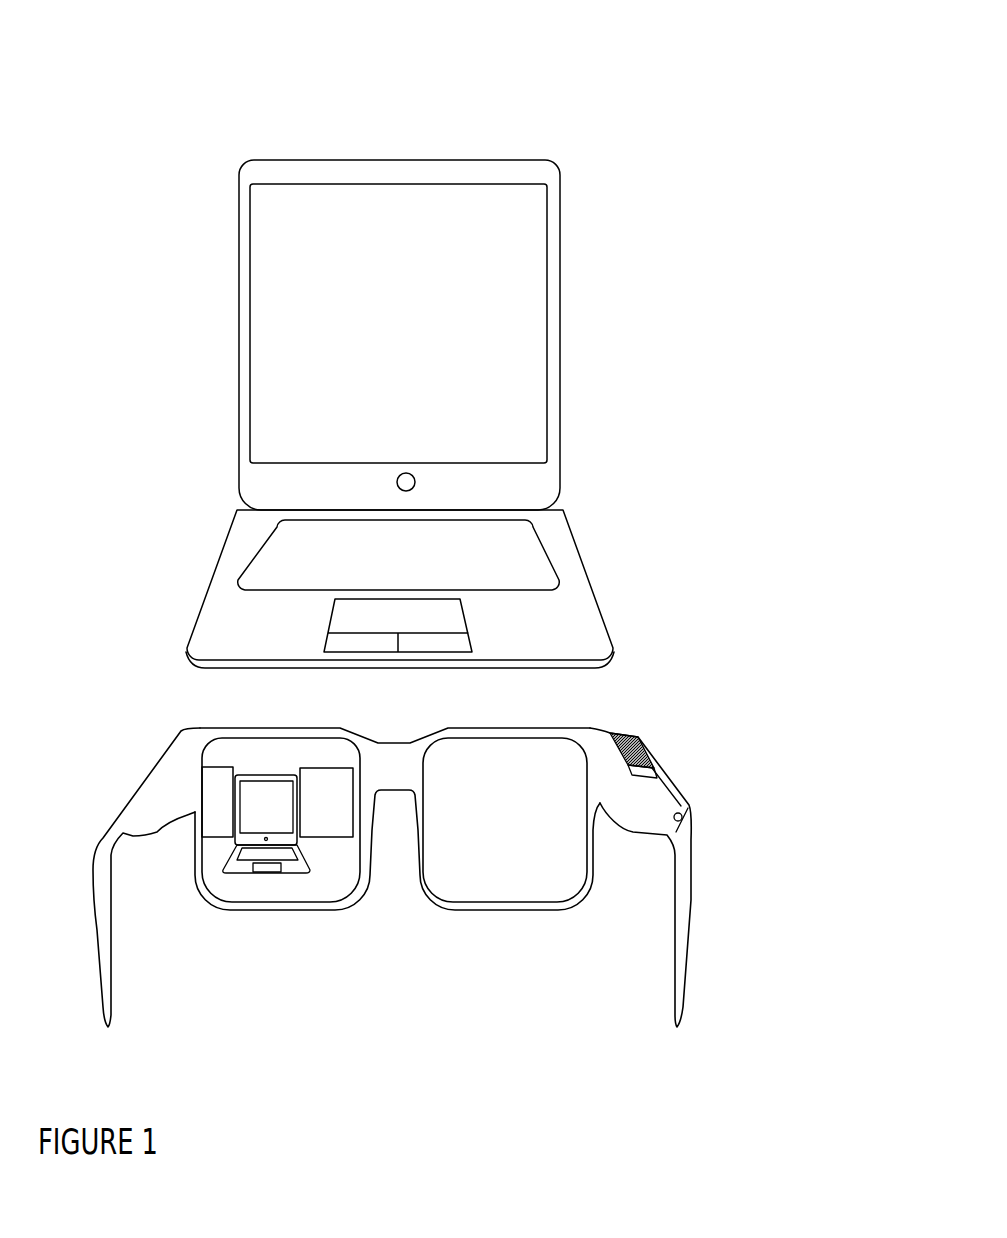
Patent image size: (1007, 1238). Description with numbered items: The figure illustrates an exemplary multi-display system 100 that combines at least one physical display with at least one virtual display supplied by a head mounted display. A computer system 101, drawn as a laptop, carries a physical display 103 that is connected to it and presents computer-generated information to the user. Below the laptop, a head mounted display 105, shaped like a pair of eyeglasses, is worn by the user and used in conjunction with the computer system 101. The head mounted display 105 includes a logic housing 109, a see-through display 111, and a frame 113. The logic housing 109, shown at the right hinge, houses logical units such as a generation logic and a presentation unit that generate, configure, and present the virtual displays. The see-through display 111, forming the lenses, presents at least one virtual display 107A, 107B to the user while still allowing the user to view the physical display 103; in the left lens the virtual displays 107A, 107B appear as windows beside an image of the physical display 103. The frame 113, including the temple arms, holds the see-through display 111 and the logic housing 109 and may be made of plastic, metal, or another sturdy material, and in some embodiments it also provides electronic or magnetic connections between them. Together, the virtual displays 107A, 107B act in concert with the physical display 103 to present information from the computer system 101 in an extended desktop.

The multi-display system 100 is at (724, 56).
The computer system 101 is at (567, 257).
The physical display 103 is at (424, 334).
The head mounted display 105 is at (125, 807).
The virtual display 107A is at (349, 815).
The virtual display 107B is at (197, 767).
The logic housing 109 is at (665, 777).
The see-through display 111 is at (237, 747).
The frame 113 is at (693, 898).